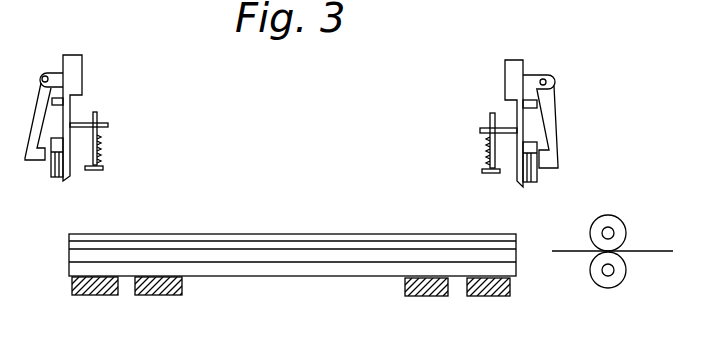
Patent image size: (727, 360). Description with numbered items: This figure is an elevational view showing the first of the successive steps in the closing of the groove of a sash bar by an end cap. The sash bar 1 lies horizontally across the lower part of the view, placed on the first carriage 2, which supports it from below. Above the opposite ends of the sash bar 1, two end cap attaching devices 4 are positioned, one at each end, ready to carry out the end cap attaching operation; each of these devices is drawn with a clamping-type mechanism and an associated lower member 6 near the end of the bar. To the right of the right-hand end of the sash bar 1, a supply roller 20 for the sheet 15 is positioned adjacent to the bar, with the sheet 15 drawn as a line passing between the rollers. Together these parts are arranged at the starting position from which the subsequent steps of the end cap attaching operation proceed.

The sash bar 1 is at (249, 270).
The first carriage 2 is at (485, 297).
The end cap attaching device 4 is at (82, 80).
The clamping pad 6 is at (57, 178).
The sheet 15 is at (643, 251).
The supply roller 20 is at (610, 216).